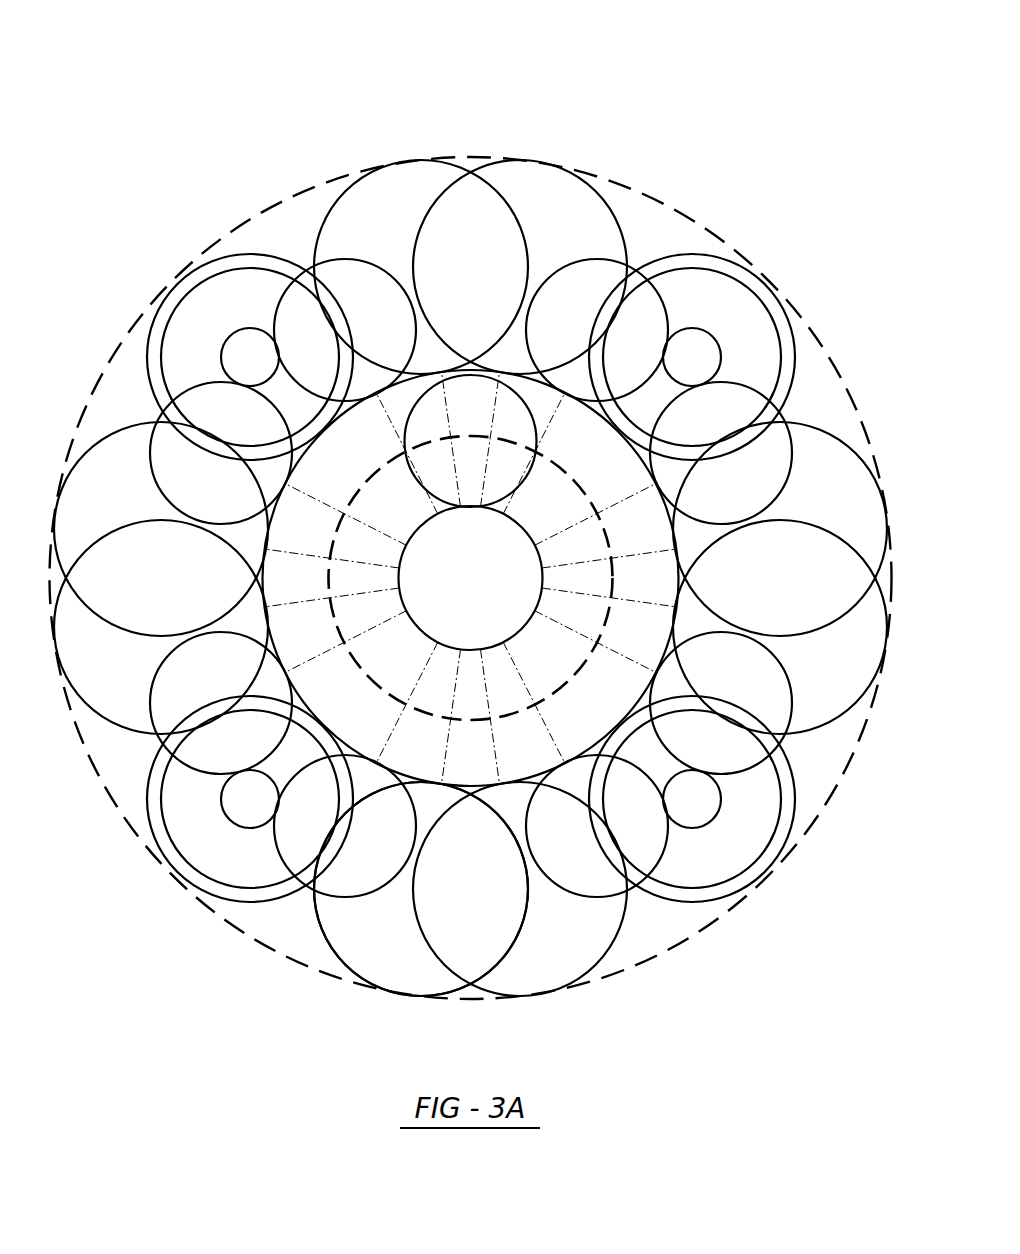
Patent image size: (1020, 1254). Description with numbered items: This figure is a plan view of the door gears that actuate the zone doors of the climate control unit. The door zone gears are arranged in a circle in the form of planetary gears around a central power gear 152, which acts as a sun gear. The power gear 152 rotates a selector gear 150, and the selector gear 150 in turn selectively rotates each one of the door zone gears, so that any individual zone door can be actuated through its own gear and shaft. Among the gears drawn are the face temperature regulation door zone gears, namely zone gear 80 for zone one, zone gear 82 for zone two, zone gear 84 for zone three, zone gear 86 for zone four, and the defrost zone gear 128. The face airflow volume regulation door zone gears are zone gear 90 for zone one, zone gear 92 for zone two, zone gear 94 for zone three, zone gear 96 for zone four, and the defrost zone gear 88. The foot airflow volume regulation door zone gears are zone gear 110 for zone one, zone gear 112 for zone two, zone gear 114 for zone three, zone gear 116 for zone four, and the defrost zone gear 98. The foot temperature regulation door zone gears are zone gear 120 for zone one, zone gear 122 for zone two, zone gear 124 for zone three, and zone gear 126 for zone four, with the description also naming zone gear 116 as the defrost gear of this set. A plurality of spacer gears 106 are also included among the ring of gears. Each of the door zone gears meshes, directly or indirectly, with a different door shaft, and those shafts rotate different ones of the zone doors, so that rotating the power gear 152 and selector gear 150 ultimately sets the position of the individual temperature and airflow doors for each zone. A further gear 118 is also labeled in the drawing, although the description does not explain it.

The zone gear 80 is at (195, 382).
The zone gear 82 is at (248, 253).
The zone gear 84 is at (310, 270).
The zone gear 86 is at (348, 187).
The defrost zone gear 88 is at (488, 165).
The zone gear 90 is at (662, 287).
The zone gear 92 is at (797, 345).
The zone gear 94 is at (787, 420).
The zone gear 96 is at (845, 435).
The defrost zone gear 98 is at (843, 715).
The spacer gears 106 is at (224, 338).
The zone gear 110 is at (752, 770).
The zone gear 112 is at (692, 903).
The zone gear 114 is at (610, 842).
The zone gear 116 is at (588, 958).
The large passage 118 is at (347, 963).
The zone gear 120 is at (334, 945).
The zone gear 122 is at (147, 805).
The zone gear 124 is at (160, 727).
The zone gear 126 is at (102, 710).
The defrost zone gear 128 is at (112, 427).
The selector gear 150 is at (530, 397).
The power gear 152 is at (325, 763).